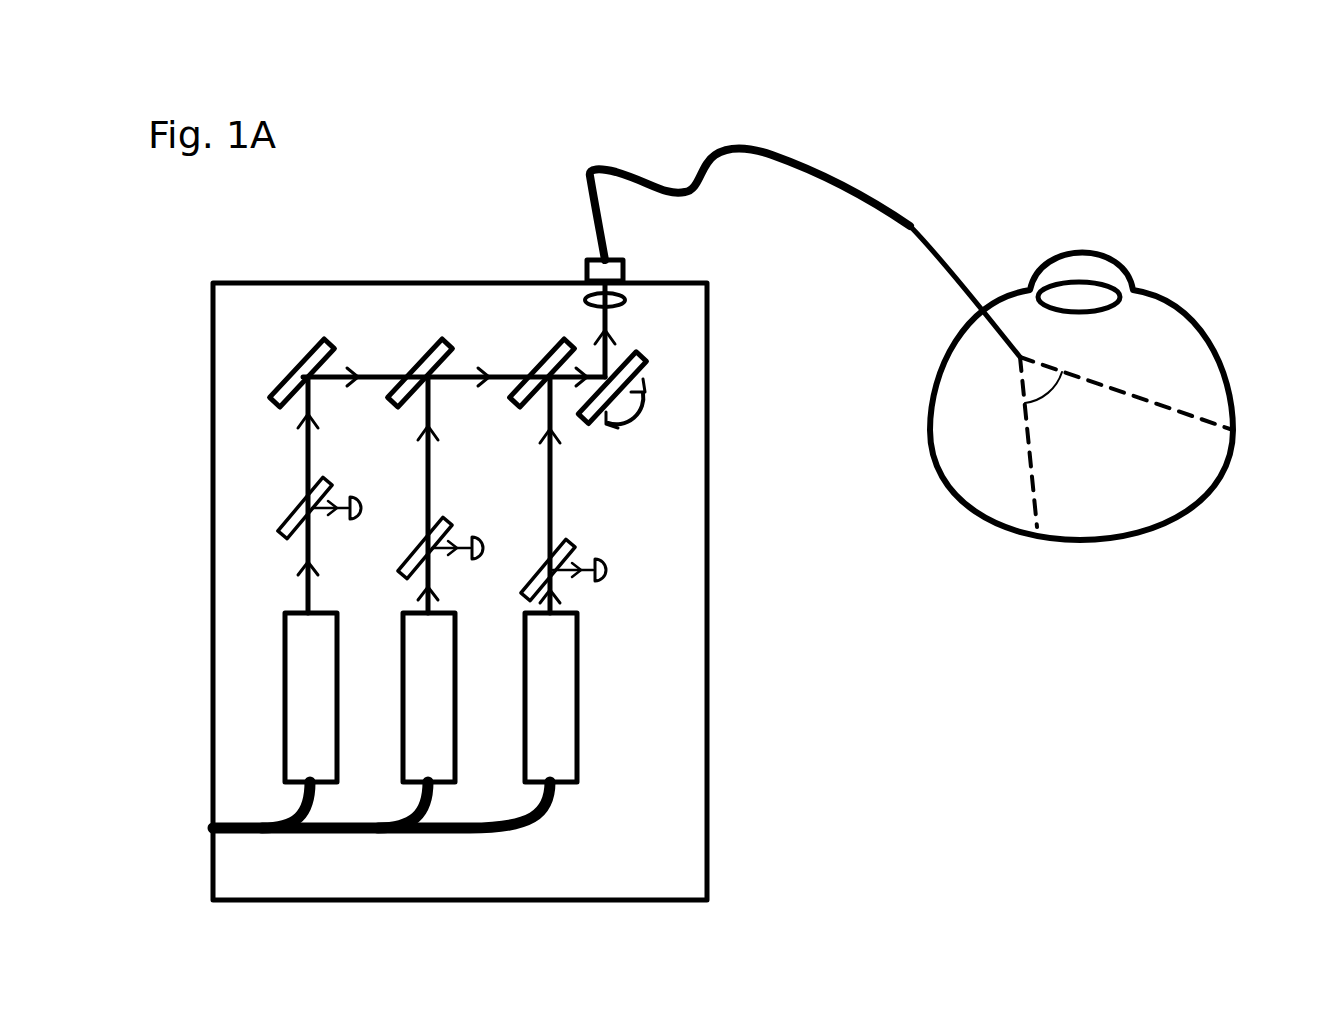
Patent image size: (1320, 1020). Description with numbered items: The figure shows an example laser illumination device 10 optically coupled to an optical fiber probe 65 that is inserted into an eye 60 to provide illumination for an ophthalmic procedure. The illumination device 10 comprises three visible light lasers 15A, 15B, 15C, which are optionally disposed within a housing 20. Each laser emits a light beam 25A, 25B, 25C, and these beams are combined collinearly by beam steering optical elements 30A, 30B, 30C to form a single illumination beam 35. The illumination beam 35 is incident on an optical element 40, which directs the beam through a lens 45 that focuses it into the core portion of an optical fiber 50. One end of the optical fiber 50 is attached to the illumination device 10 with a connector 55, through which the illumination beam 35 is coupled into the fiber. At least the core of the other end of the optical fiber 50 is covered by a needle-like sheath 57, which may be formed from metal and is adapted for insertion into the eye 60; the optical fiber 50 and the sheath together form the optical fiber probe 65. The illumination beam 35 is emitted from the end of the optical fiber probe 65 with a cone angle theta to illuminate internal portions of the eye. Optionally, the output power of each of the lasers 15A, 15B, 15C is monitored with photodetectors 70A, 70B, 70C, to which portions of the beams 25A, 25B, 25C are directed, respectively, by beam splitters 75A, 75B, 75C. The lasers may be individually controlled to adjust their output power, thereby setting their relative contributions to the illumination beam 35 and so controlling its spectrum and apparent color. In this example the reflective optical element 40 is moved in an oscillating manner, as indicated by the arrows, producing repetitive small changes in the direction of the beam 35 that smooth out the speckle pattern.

The illumination device 10 is at (372, 252).
The visible light laser 15A is at (284, 688).
The visible light laser 15B is at (403, 680).
The visible light laser 15C is at (525, 680).
The housing 20 is at (708, 792).
The light beam 25A is at (300, 547).
The light beam 25B is at (427, 482).
The light beam 25C is at (553, 498).
The beam steering optical element 30A is at (300, 350).
The beam steering optical element 30B is at (402, 354).
The beam steering optical element 30C is at (524, 364).
The illumination beam 35 is at (594, 372).
The optical element 40 is at (640, 366).
The lens 45 is at (626, 300).
The optical fiber 50 is at (640, 172).
The connector 55 is at (616, 260).
The sheath 57 is at (930, 244).
The eye 60 is at (1165, 302).
The optical fiber probe 65 is at (889, 168).
The photodetector 70A is at (356, 522).
The photodetector 70B is at (482, 538).
The photodetector 70C is at (614, 561).
The beam splitter 75A is at (292, 505).
The beam splitter 75B is at (416, 549).
The beam splitter 75C is at (538, 572).